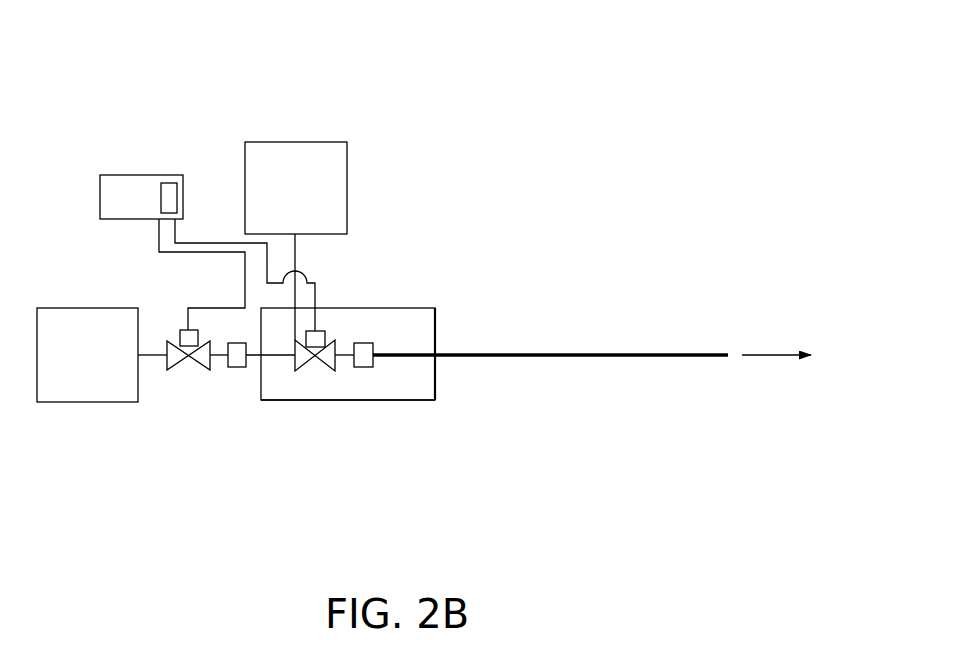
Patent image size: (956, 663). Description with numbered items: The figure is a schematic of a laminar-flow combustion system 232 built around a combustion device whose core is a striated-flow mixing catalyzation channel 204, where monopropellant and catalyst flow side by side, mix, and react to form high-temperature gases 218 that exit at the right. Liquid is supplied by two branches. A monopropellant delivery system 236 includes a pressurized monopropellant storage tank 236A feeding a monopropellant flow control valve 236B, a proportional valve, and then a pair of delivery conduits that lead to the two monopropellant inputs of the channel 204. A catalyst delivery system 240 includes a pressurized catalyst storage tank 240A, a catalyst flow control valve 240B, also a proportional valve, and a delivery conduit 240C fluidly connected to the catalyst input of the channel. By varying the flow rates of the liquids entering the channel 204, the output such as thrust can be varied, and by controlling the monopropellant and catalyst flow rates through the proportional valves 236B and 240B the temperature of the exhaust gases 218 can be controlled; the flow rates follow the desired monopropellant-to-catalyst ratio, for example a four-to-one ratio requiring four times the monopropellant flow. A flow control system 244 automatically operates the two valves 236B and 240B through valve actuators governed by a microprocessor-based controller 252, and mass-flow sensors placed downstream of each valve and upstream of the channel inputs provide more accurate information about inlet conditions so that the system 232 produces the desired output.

The laminar-flow combustion system 232 is at (625, 67).
The catalyst delivery system 240 is at (422, 149).
The monopropellant delivery system 236 is at (190, 500).
The flow control system 244 is at (130, 175).
The microprocessor-based controller 252 is at (170, 182).
The pressurized catalyst storage tank 240A is at (287, 142).
The delivery conduit 240C is at (296, 270).
The pressurized monopropellant storage tank 236A is at (60, 403).
The monopropellant flow control valve 236B is at (174, 371).
The catalyst flow control valve 240B is at (335, 372).
The striated-flow mixing catalyzation channel 204 is at (675, 344).
The high-temperature gases 218 is at (783, 358).